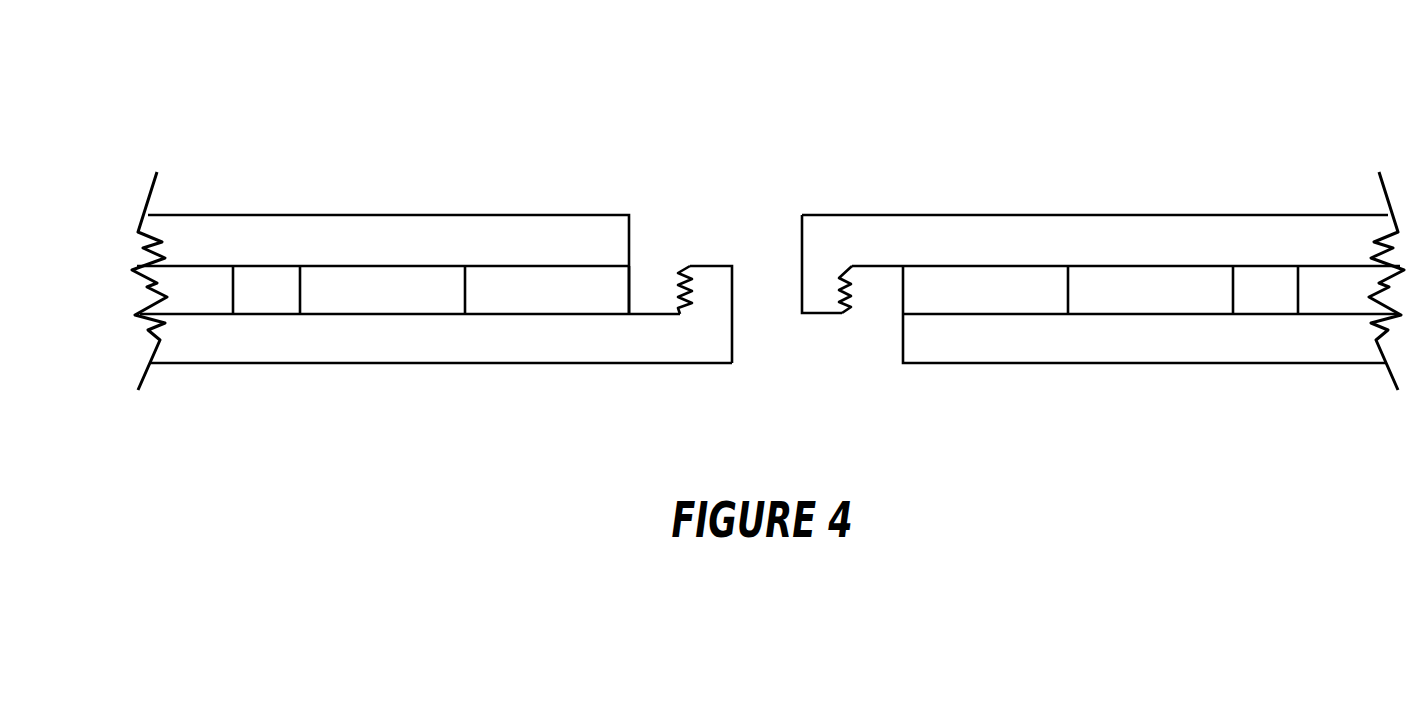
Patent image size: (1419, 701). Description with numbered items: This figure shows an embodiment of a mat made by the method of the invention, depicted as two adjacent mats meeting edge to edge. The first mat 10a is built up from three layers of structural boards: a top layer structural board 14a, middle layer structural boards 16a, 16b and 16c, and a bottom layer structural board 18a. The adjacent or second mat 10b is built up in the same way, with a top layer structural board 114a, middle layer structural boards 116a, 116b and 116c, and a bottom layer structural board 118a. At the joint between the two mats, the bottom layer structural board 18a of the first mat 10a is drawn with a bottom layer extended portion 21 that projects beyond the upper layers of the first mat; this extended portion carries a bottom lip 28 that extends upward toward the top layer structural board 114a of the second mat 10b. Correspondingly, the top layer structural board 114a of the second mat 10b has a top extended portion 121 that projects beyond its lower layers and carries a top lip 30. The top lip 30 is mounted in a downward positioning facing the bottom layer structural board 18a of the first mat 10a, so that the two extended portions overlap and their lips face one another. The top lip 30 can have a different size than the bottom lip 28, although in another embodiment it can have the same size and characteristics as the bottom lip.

The first mat 10a is at (551, 135).
The second mat 10b is at (960, 135).
The top layer structural board 14a is at (367, 215).
The middle layer structural board 16a is at (631, 288).
The middle layer structural board 16b is at (298, 290).
The middle layer structural board 16c is at (233, 290).
The bottom layer structural board 18a is at (367, 364).
The bottom layer extended portion 21 is at (706, 372).
The bottom lip 28 is at (710, 265).
The top lip 30 is at (822, 314).
The top extended portion 121 is at (822, 208).
The top layer structural board 114a is at (1164, 215).
The middle layer structural board 116a is at (903, 292).
The middle layer structural board 116b is at (1233, 291).
The middle layer structural board 116c is at (1297, 290).
The bottom layer structural board 118a is at (1165, 365).